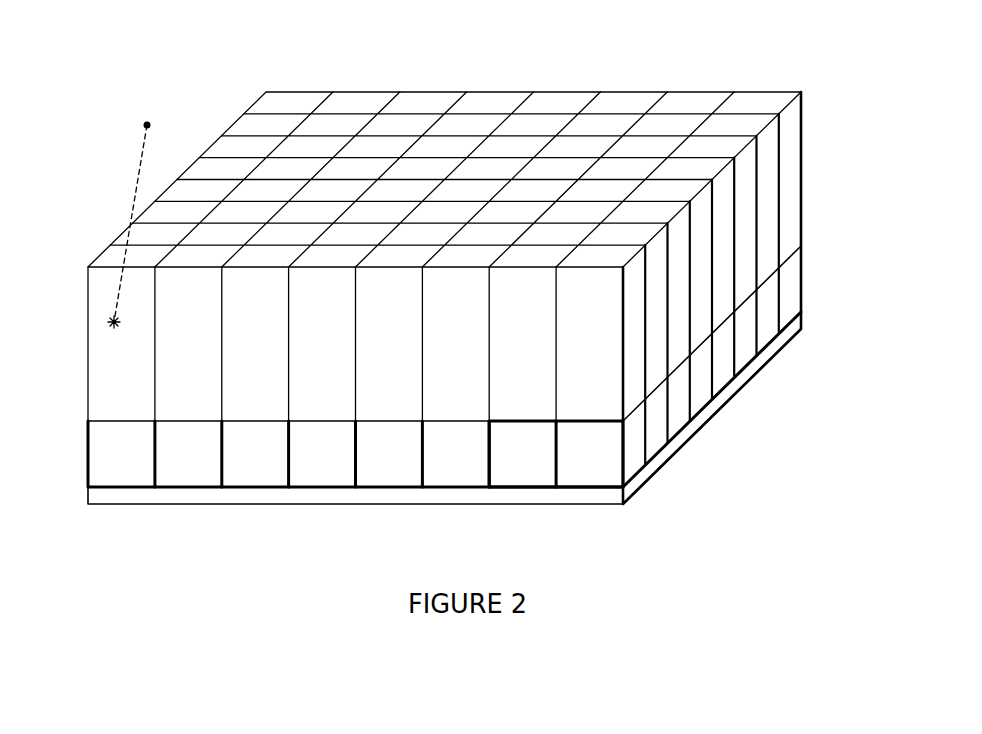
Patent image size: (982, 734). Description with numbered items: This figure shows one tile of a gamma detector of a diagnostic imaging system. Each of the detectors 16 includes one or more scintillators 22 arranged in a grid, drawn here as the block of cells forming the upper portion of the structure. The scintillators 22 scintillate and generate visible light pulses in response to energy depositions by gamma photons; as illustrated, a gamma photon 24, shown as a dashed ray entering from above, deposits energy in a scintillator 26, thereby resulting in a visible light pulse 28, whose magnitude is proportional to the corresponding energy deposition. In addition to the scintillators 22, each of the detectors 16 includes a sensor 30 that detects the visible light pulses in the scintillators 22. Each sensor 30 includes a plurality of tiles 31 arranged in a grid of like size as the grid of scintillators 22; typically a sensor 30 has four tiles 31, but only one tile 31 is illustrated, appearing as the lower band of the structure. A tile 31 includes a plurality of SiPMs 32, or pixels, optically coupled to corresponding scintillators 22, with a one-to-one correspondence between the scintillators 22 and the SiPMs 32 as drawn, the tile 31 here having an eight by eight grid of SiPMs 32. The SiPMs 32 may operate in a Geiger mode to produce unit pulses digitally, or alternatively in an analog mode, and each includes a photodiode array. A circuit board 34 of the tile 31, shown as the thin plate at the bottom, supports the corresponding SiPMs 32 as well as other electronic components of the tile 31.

The detector 16 is at (829, 44).
The scintillators 22 is at (297, 100).
The gamma photon 24 is at (146, 121).
The scintillator 26 is at (100, 258).
The visible light pulse 28 is at (108, 320).
The sensor 30 is at (814, 432).
The tile 31 is at (77, 421).
The SiPMs 32 is at (534, 465).
The circuit board 34 is at (190, 497).